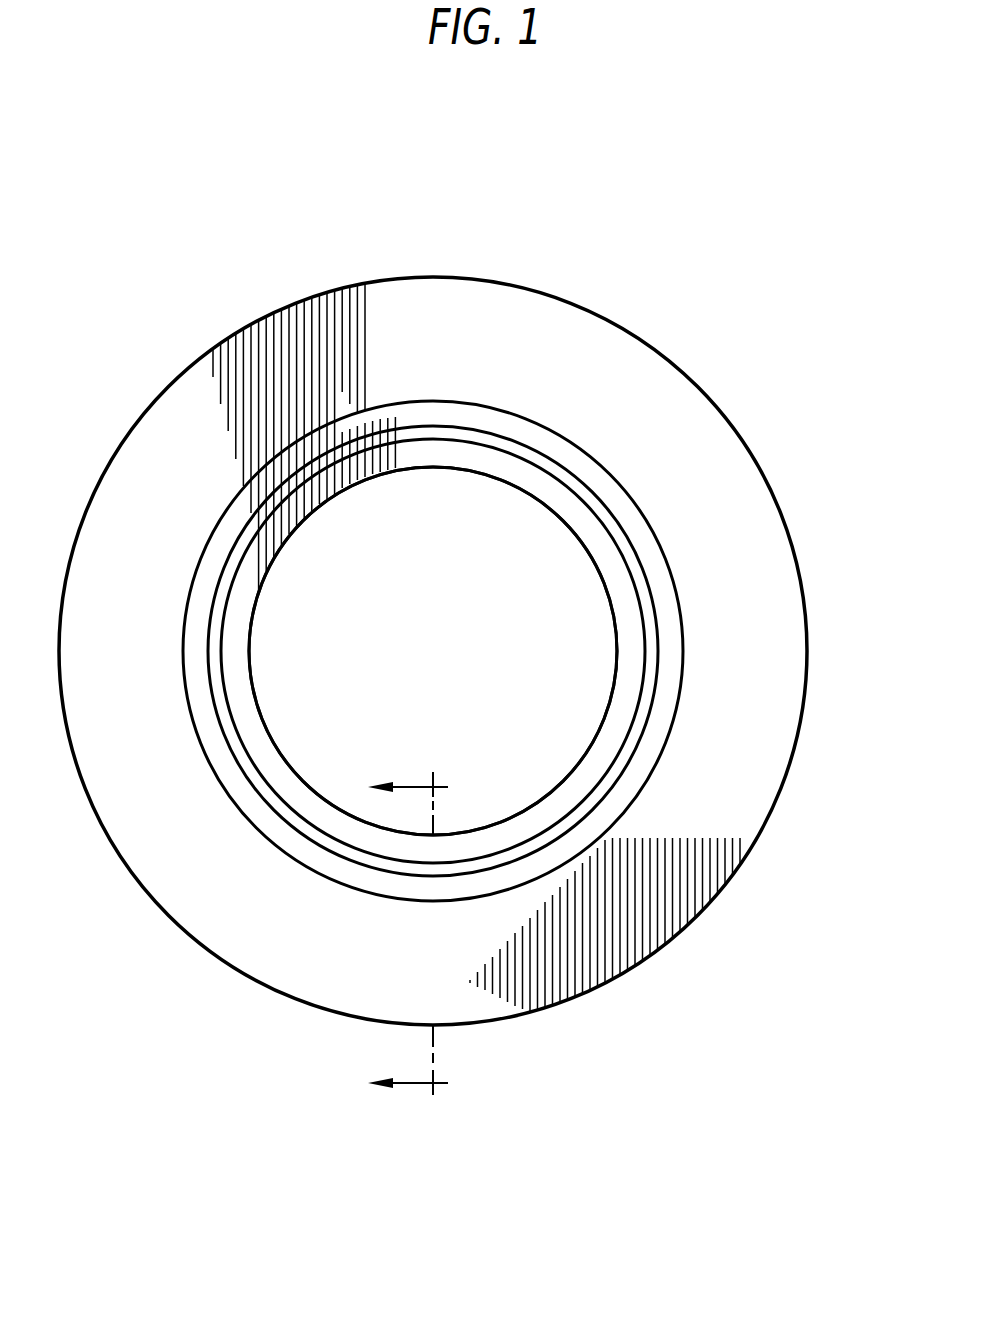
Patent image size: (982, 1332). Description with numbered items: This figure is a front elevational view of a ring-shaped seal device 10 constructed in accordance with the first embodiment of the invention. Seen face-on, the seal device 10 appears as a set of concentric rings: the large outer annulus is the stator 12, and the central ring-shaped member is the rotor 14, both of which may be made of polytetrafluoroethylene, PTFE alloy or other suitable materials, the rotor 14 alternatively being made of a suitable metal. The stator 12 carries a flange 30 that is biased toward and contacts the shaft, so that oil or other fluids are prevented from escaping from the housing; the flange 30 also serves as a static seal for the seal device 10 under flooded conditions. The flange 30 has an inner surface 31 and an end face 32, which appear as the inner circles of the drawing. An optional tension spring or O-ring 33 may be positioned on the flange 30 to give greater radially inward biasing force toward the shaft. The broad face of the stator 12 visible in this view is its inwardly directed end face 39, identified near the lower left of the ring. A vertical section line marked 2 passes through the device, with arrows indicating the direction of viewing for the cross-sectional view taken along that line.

The seal device 10 is at (692, 340).
The stator 12 is at (728, 883).
The rotor 14 is at (253, 697).
The flange 30 is at (617, 635).
The inner surface 31 is at (543, 505).
The end face 32 is at (635, 665).
The tension spring or O-ring 33 is at (635, 743).
The inwardly directed end face 39 is at (267, 943).
The section line 2- 2 is at (408, 936).